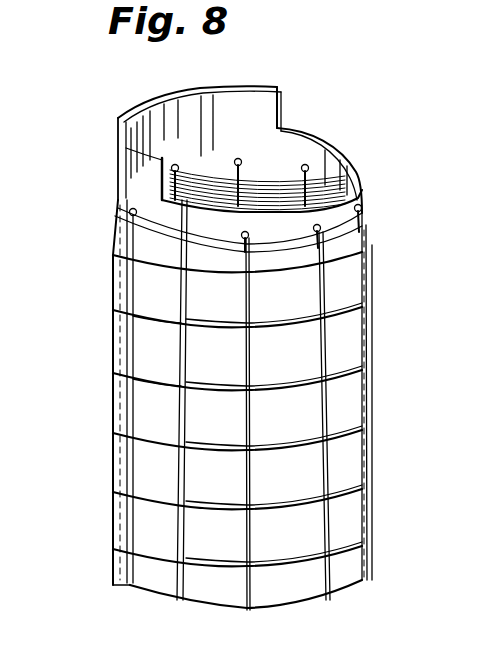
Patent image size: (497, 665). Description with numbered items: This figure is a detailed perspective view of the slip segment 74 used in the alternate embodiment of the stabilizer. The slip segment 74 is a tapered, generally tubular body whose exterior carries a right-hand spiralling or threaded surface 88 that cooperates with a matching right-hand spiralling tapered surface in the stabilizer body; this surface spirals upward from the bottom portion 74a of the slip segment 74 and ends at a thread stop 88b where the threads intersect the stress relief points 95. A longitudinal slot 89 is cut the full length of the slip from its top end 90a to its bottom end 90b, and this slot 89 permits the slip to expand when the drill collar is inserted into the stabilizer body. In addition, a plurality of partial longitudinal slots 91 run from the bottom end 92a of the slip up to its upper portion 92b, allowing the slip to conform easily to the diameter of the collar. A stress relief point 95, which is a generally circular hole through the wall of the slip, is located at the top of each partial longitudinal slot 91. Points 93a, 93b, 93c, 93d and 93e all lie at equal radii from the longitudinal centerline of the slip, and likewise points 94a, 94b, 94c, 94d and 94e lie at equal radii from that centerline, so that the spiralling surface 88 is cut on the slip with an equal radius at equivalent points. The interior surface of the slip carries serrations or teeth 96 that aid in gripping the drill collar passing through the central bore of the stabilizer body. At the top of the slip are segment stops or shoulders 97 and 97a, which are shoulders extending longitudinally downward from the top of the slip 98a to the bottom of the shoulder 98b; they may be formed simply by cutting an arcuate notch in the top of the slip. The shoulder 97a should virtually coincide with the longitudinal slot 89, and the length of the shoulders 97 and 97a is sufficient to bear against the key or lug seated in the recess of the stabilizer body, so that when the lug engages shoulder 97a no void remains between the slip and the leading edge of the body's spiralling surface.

The slip segment 74 is at (96, 474).
The bottom portion of slip 74a is at (217, 608).
The right-hand spiralling or threaded surface 88 is at (150, 352).
The thread stop 88b is at (345, 203).
The longitudinal slot 89 is at (173, 413).
The top end of slip 90a is at (177, 218).
The bottom end of slip 90b is at (177, 600).
The partial longitudinal slots 91 is at (272, 273).
The bottom end of slip 92a is at (368, 580).
The upper portion of slip 92b is at (128, 217).
The equal-radius point 93a is at (355, 545).
The equal-radius point 93b is at (278, 511).
The equal-radius point 93c is at (277, 453).
The equal-radius point 93d is at (275, 393).
The equal-radius point 93e is at (273, 333).
The equal-radius point 94a is at (279, 551).
The equal-radius point 94b is at (277, 498).
The equal-radius point 94c is at (277, 437).
The equal-radius point 94d is at (273, 375).
The equal-radius point 94e is at (272, 315).
The stress relief point 95 is at (360, 203).
The serrations or teeth 96 is at (345, 159).
The segment stop or shoulder 97 is at (280, 108).
The segment stop or shoulder 97a is at (163, 178).
The top of slip 98a is at (278, 88).
The bottom of shoulder 98b is at (282, 128).